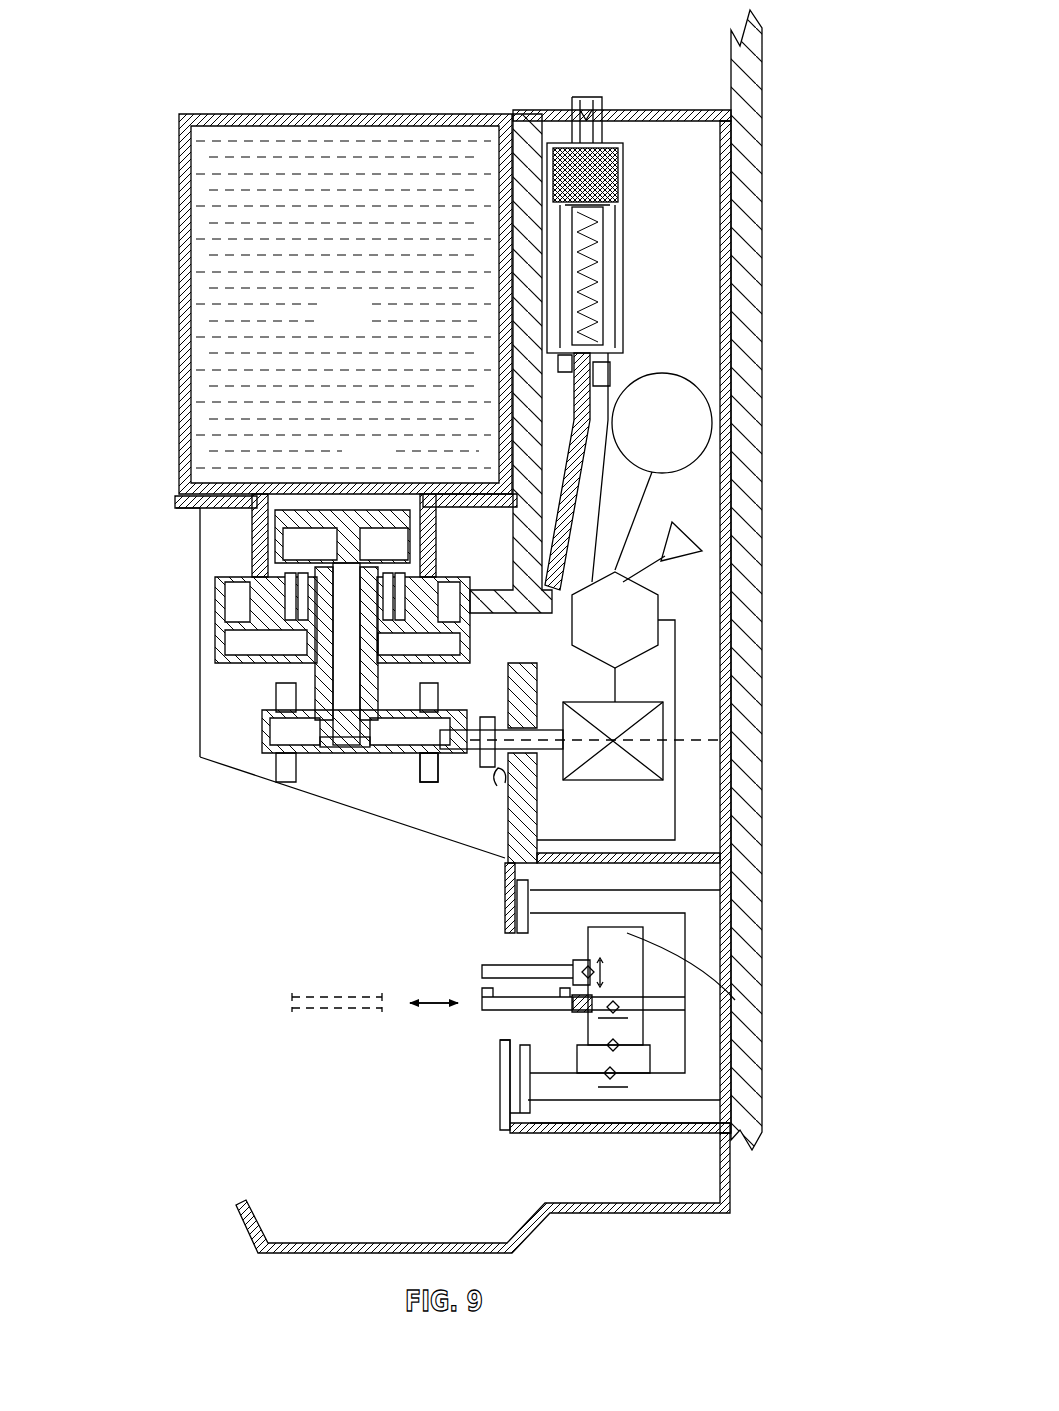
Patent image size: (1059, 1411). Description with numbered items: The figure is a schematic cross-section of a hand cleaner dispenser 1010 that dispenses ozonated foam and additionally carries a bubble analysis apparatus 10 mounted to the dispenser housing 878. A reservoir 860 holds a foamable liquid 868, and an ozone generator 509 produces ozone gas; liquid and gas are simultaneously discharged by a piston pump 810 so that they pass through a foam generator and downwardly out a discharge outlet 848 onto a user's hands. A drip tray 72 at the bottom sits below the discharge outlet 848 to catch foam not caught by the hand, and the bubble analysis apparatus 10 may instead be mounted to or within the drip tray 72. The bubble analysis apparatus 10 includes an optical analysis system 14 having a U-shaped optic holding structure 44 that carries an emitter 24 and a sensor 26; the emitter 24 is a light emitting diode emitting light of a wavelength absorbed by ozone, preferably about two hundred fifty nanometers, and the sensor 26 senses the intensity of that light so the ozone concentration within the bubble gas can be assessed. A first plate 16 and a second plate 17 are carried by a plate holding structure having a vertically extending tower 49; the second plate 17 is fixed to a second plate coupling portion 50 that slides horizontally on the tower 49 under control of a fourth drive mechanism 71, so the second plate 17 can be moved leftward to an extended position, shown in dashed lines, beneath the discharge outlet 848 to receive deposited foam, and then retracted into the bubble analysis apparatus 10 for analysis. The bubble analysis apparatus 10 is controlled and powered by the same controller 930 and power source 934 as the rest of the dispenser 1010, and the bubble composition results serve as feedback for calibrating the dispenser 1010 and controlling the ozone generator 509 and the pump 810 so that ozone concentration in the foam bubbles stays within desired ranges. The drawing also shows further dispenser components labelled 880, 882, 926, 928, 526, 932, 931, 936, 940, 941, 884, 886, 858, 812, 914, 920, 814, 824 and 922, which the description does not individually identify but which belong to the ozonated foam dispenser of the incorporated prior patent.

The dispenser 1010 is at (185, 75).
The reservoir 860 is at (180, 270).
The foamable liquid 868 is at (364, 329).
The housing 878 is at (510, 104).
The actuator housing 880 is at (513, 100).
The outer wall 882 is at (755, 122).
The plate 926 is at (722, 198).
The chamber 928 is at (693, 272).
The ozone generator 509 is at (626, 316).
The conduit 526 is at (608, 380).
The controller 932 is at (680, 437).
The power source 934 is at (688, 530).
The controller 930 is at (634, 635).
The gearbox 931 is at (676, 742).
The drive shaft 936 is at (470, 756).
The bearing 940 is at (500, 788).
The seal 941 is at (497, 786).
The flange 884 is at (176, 500).
The seal 886 is at (183, 510).
The conduit 858 is at (425, 495).
The pump housing wall 812 is at (200, 575).
The piston pump 810 is at (218, 632).
The pump 914 is at (262, 745).
The plate 920 is at (283, 692).
The discharge outlet 848 is at (335, 757).
The post 814 is at (255, 640).
The post 824 is at (415, 642).
The post 922 is at (430, 782).
The bubble analysis apparatus 10 is at (710, 877).
The optical analysis system 14 is at (508, 912).
The emitter 24 is at (523, 937).
The first plate 16 is at (536, 970).
The fourth drive mechanism 71 is at (615, 990).
The second plate 17 is at (490, 1011).
The second plate coupling portion 50 is at (578, 1015).
The sensor 26 is at (502, 1068).
The tower 49 is at (735, 1000).
The optic holding structure 44 is at (667, 1083).
The drip tray 72 is at (252, 1212).